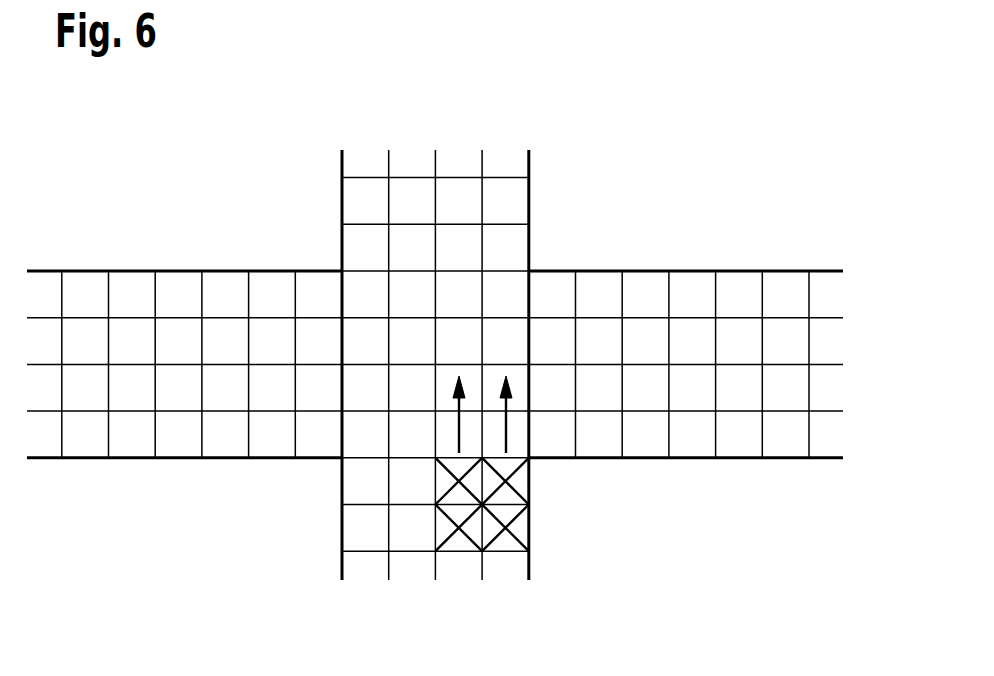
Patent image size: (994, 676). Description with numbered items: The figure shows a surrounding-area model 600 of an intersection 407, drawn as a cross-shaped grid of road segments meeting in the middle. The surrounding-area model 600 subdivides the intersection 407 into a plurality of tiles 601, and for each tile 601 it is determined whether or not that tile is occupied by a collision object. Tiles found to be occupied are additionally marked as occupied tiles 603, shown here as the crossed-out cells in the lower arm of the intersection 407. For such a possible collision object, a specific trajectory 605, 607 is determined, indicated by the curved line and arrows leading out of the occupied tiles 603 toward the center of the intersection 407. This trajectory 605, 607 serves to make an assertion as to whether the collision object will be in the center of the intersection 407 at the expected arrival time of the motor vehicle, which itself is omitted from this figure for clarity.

The intersection 407 is at (563, 242).
The surrounding-area model 600 is at (710, 242).
The tiles 601 is at (180, 440).
The occupied tiles 603 is at (520, 480).
The trajectory 605 is at (459, 423).
The trajectory 607 is at (506, 423).